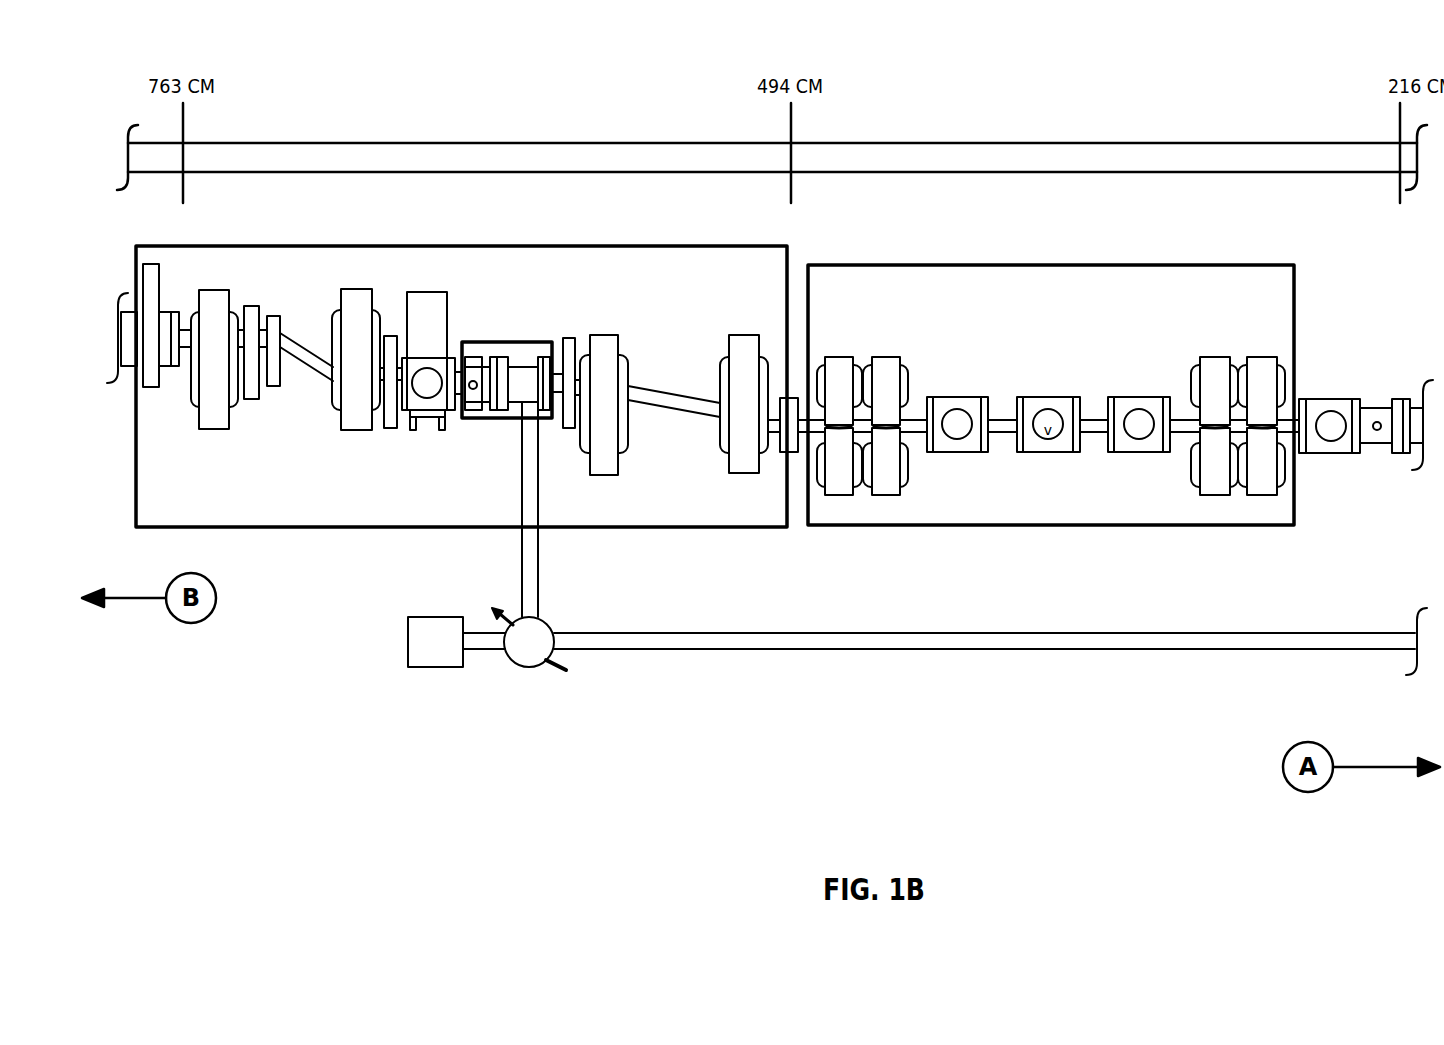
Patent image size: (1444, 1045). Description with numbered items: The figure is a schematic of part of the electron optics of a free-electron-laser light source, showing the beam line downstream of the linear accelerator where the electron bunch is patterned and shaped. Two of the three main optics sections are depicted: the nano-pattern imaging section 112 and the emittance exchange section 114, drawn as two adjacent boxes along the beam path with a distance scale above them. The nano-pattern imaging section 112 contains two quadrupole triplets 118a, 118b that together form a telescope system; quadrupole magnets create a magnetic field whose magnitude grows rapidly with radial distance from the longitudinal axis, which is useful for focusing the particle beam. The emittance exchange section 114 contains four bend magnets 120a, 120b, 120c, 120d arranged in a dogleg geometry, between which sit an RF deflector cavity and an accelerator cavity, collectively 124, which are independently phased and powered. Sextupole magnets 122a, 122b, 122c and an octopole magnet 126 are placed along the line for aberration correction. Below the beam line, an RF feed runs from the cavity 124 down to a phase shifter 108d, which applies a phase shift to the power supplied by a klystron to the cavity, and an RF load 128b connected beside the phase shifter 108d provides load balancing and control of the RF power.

The nano-pattern imaging section 112 is at (1127, 262).
The emittance exchange section 114 is at (585, 245).
The quadrupole triplet 118a is at (1238, 357).
The quadrupole triplet 118b is at (862, 353).
The bend magnet 120a is at (740, 335).
The bend magnet 120b is at (607, 335).
The bend magnet 120c is at (363, 430).
The bend magnet 120d is at (215, 429).
The sextupole magnet 122a is at (569, 428).
The sextupole magnet 122b is at (391, 428).
The sextupole magnet 122c is at (252, 399).
The RF deflector cavity and accelerator cavity 124 is at (498, 342).
The octopole magnet 126 is at (277, 316).
The RF load 128b is at (437, 667).
The phase shifter 108d is at (537, 667).